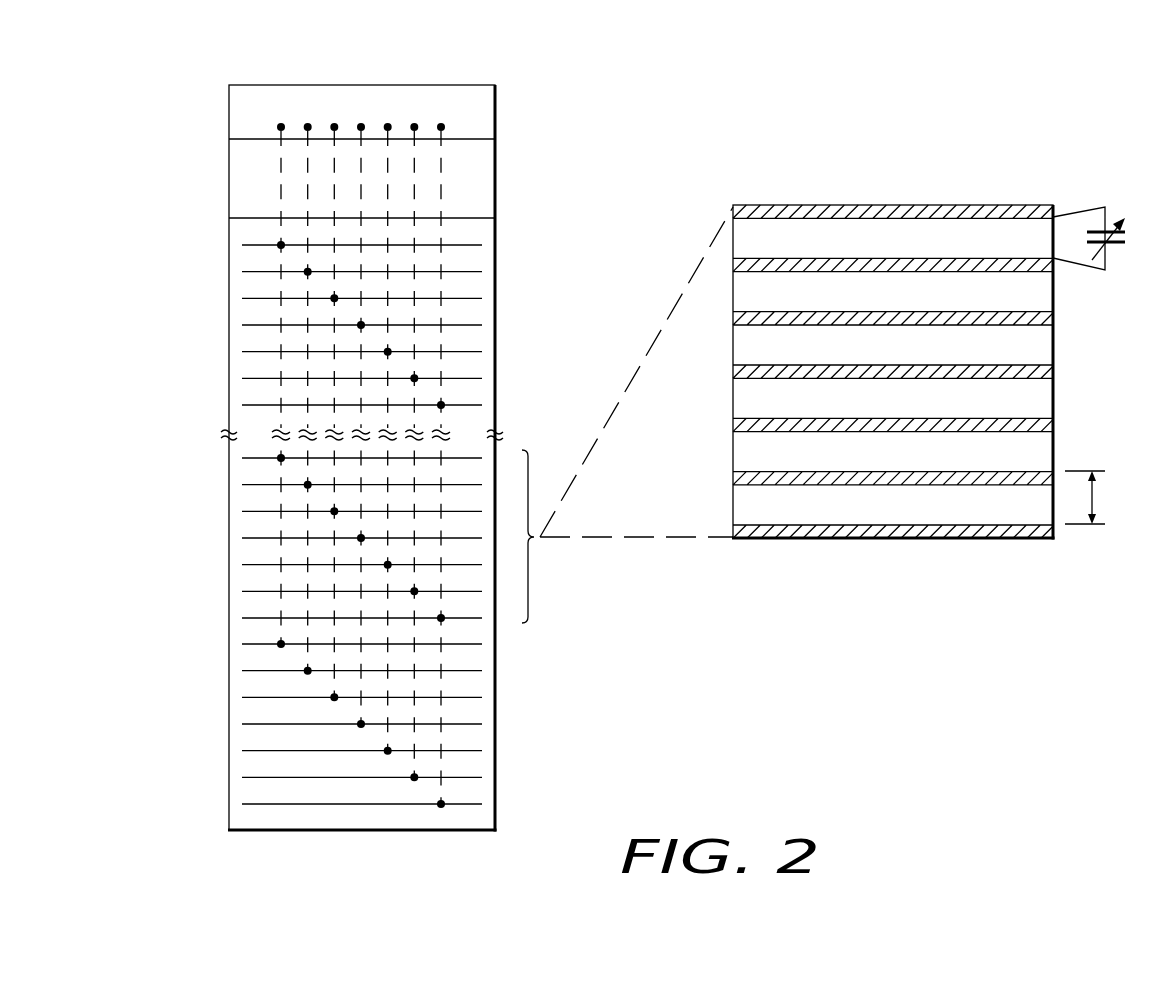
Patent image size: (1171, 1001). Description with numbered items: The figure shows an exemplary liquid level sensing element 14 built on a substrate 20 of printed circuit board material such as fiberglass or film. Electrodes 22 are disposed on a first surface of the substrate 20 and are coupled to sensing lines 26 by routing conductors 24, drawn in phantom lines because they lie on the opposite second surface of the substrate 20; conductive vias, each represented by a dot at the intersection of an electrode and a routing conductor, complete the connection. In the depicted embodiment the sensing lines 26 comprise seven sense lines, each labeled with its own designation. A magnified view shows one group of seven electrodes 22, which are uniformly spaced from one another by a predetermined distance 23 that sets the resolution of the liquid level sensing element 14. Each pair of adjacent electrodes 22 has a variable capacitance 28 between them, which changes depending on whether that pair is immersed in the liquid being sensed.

The liquid level sensing element 14 is at (228, 182).
The substrate 20 is at (228, 634).
The electrodes 22 is at (465, 245).
The predetermined distance 23 is at (1095, 497).
The routing conductors 24 is at (414, 659).
The sensing lines 26 is at (448, 73).
The variable capacitance 28 is at (1118, 246).